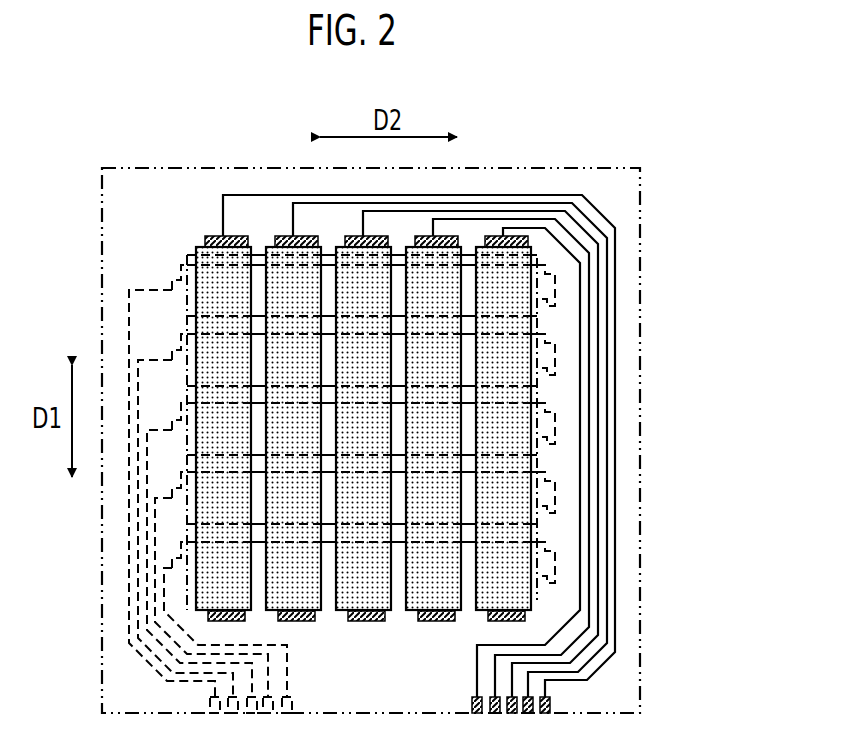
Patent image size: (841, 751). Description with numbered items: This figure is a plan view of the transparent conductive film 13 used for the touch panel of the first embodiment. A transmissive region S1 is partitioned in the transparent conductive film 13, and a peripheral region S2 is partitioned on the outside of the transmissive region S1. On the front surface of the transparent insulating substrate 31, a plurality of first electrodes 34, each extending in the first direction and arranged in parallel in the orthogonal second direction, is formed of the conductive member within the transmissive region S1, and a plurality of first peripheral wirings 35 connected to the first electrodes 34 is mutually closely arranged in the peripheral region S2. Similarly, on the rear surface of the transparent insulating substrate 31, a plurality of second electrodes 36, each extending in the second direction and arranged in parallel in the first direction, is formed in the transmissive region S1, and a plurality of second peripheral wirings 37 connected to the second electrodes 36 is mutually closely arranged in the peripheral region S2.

The transparent conductive film 13 is at (592, 157).
The transparent insulating substrate 31 is at (645, 285).
The first electrodes 34 is at (245, 247).
The first peripheral wirings 35 is at (616, 478).
The second electrodes 36 is at (176, 262).
The second peripheral wirings 37 is at (127, 588).
The transmissive region S1 is at (190, 250).
The peripheral region S2 is at (122, 195).